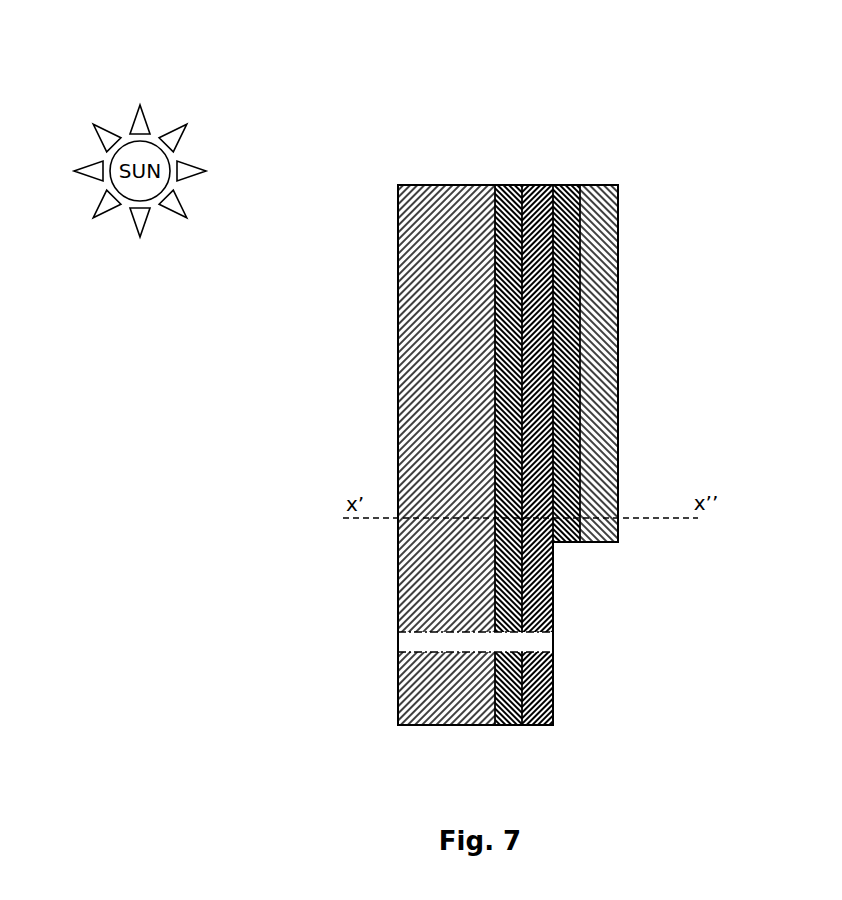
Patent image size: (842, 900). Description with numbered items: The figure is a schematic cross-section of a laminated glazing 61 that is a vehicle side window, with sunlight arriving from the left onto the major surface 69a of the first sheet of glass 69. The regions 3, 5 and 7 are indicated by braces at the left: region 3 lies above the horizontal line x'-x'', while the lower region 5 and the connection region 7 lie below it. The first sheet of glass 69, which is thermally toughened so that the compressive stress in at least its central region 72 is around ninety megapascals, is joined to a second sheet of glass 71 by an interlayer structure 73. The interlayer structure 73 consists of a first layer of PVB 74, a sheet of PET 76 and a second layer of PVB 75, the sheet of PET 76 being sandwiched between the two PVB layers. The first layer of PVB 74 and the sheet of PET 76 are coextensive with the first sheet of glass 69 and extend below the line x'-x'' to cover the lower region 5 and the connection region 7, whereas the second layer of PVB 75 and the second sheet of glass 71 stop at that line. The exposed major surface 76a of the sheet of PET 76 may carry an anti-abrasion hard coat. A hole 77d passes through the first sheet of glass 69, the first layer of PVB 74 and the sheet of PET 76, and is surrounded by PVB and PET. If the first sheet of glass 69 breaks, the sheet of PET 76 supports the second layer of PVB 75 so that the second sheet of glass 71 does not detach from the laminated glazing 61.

The laminated glazing 61 is at (347, 144).
The region 3 is at (270, 185).
The lower region 5 is at (308, 725).
The connection region 7 is at (376, 683).
The first sheet of glass 69 is at (458, 197).
The major surface 69a is at (396, 258).
The central region 72 is at (365, 380).
The interlayer structure 73 is at (553, 379).
The first layer of PVB 74 is at (514, 197).
The second layer of PVB 75 is at (592, 329).
The sheet of PET 76 is at (541, 197).
The exposed major surface 76a is at (556, 577).
The hole 77d is at (572, 643).
The second sheet of glass 71 is at (605, 196).